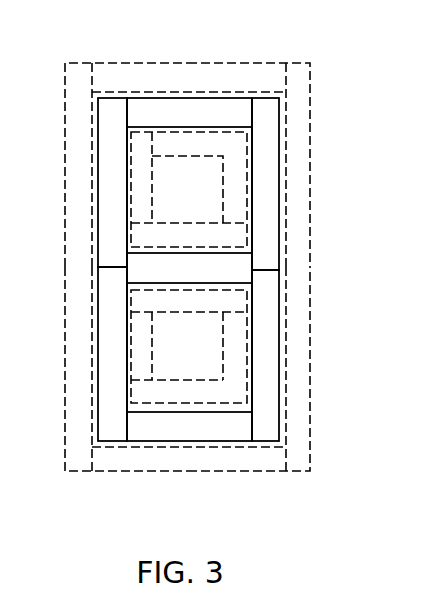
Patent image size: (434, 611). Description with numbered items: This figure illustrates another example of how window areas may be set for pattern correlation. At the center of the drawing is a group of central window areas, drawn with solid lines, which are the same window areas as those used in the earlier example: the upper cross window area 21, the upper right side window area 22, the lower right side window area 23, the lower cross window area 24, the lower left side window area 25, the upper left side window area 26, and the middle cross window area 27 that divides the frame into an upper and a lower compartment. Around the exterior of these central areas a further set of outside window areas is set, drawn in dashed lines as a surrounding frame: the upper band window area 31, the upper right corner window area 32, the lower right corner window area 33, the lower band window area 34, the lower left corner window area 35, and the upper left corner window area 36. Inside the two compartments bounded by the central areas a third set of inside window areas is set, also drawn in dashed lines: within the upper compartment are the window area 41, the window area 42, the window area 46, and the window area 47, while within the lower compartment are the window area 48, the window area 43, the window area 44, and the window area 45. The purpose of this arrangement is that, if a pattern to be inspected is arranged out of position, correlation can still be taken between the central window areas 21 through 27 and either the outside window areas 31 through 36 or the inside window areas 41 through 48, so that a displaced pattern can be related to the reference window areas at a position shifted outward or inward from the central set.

The window area 21 is at (189, 112).
The window area 22 is at (265, 108).
The window area 23 is at (262, 428).
The window area 24 is at (189, 426).
The window area 25 is at (112, 430).
The window area 26 is at (114, 108).
The window area 27 is at (189, 268).
The window area 31 is at (189, 165).
The window area 32 is at (298, 72).
The window area 33 is at (297, 458).
The window area 34 is at (189, 369).
The window area 35 is at (75, 460).
The window area 36 is at (80, 75).
The window area 41 is at (189, 189).
The window area 42 is at (236, 140).
The window area 43 is at (233, 372).
The window area 44 is at (177, 392).
The window area 45 is at (142, 370).
The window area 46 is at (145, 137).
The window area 47 is at (189, 236).
The window area 48 is at (189, 346).